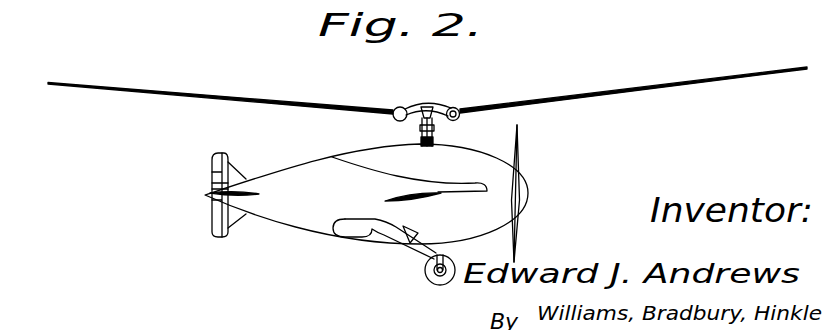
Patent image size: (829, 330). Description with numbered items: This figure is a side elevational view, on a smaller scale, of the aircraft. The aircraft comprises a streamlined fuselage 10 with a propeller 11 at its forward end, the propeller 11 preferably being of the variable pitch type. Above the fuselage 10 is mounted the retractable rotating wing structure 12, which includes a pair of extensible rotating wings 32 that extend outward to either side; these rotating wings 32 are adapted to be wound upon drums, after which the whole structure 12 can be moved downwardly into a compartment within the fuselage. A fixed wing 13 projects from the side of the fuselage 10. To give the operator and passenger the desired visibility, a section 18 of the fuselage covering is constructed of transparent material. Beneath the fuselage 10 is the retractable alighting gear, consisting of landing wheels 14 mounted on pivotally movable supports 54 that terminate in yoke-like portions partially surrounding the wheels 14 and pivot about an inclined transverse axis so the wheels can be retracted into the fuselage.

The streamlined fuselage 10 is at (276, 223).
The propeller 11 is at (521, 169).
The retractable rotating wing structure 12 is at (502, 105).
The fixed wing 13 is at (438, 197).
The retractable landing wheels 14 is at (428, 278).
The transparent section of fuselage covering 18 is at (466, 150).
The extensible rotating wings 32 is at (179, 95).
The pivotally movable supports 54 is at (398, 248).